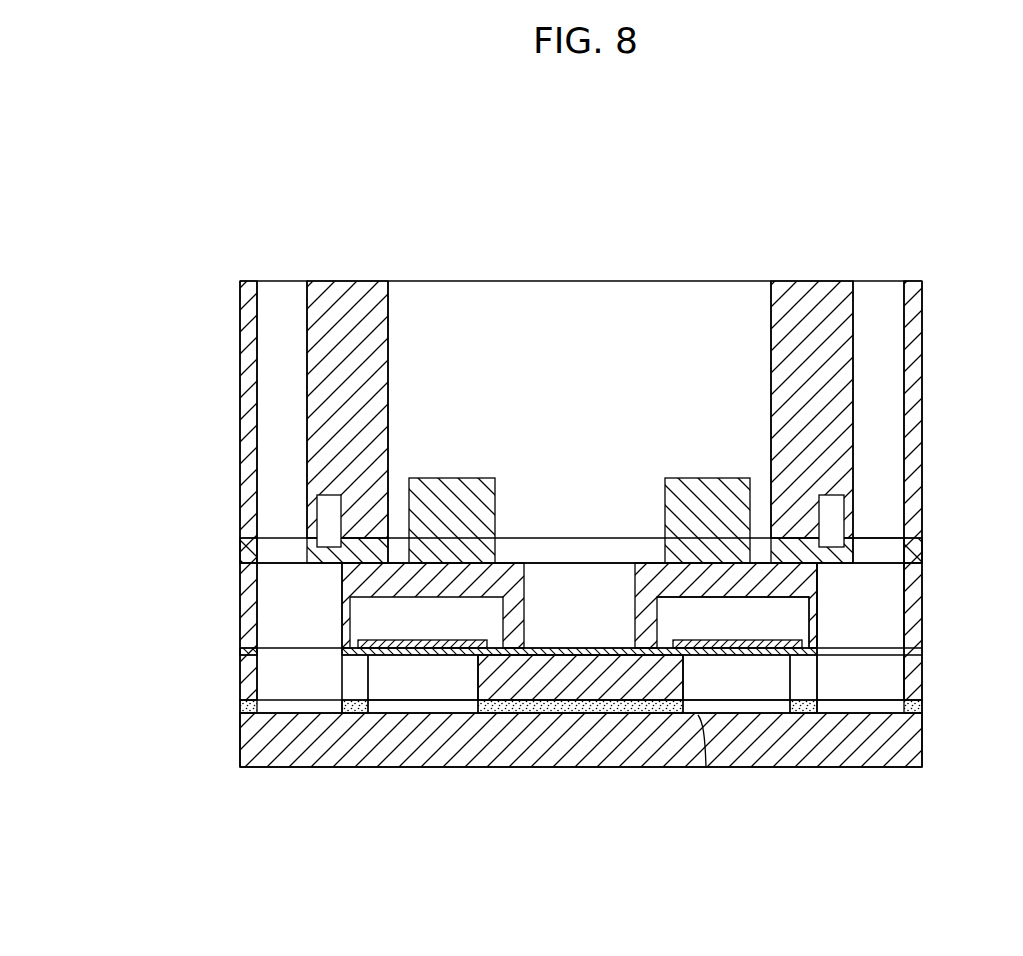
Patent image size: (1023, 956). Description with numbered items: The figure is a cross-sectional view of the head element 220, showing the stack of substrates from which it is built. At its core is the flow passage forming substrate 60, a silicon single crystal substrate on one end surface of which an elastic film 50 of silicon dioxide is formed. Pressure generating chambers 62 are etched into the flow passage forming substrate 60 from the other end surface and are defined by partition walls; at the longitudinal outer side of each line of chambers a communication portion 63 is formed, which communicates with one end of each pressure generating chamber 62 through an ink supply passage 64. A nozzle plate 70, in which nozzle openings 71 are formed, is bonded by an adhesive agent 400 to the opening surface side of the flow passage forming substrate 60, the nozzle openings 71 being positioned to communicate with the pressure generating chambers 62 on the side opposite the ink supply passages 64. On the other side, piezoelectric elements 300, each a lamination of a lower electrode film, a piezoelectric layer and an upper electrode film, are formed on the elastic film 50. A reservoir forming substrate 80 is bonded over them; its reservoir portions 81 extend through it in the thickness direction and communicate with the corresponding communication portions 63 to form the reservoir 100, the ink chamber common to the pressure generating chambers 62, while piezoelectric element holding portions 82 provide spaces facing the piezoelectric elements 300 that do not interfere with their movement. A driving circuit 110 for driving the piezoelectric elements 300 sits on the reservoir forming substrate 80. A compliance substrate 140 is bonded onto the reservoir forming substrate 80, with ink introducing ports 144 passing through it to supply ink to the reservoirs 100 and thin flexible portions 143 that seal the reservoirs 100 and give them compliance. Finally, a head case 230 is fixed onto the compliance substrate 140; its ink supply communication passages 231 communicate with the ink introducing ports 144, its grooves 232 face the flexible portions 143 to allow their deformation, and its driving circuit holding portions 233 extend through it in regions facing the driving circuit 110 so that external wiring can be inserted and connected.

The head element 220 is at (882, 130).
The head case 230 is at (815, 312).
The ink supply communication passage 231 is at (903, 310).
The groove 232 is at (843, 512).
The driving circuit holding portion 233 is at (770, 330).
The ink introducing port 144 is at (888, 533).
The flexible portion 143 is at (330, 540).
The compliance substrate 140 is at (247, 548).
The driving circuit 110 is at (450, 495).
The reservoir 100 is at (985, 815).
The reservoir forming substrate 80 is at (248, 595).
The reservoir portion 81 is at (887, 633).
The piezoelectric element holding portion 82 is at (665, 625).
The piezoelectric element 300 is at (750, 652).
The elastic film 50 is at (247, 649).
The flow passage forming substrate 60 is at (248, 682).
The pressure generating chamber 62 is at (378, 673).
The communication portion 63 is at (872, 680).
The ink supply passage 64 is at (807, 685).
The adhesive agent 400 is at (582, 707).
The nozzle plate 70 is at (253, 738).
The nozzle opening 71 is at (463, 720).